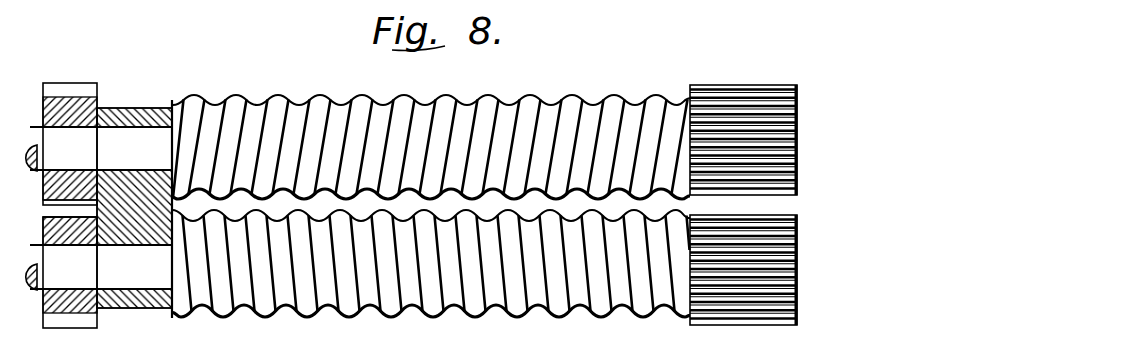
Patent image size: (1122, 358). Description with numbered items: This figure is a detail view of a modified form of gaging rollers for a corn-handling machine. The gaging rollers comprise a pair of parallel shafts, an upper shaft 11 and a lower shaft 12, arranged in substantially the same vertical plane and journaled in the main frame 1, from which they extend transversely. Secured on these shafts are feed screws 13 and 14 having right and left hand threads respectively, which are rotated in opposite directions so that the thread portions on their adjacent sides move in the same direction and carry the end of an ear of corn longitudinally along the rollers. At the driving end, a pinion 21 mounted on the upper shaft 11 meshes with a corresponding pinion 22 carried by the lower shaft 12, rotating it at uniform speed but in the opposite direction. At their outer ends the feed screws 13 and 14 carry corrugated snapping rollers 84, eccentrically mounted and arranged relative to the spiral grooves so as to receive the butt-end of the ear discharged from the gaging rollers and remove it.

The main frame 1 is at (160, 308).
The upper shaft 11 is at (116, 133).
The shaft 12 is at (143, 272).
The feed screw 13 is at (566, 97).
The feed screw 14 is at (612, 307).
The pinion 21 is at (58, 97).
The pinion 22 is at (81, 313).
The corrugated rollers 84 is at (706, 86).